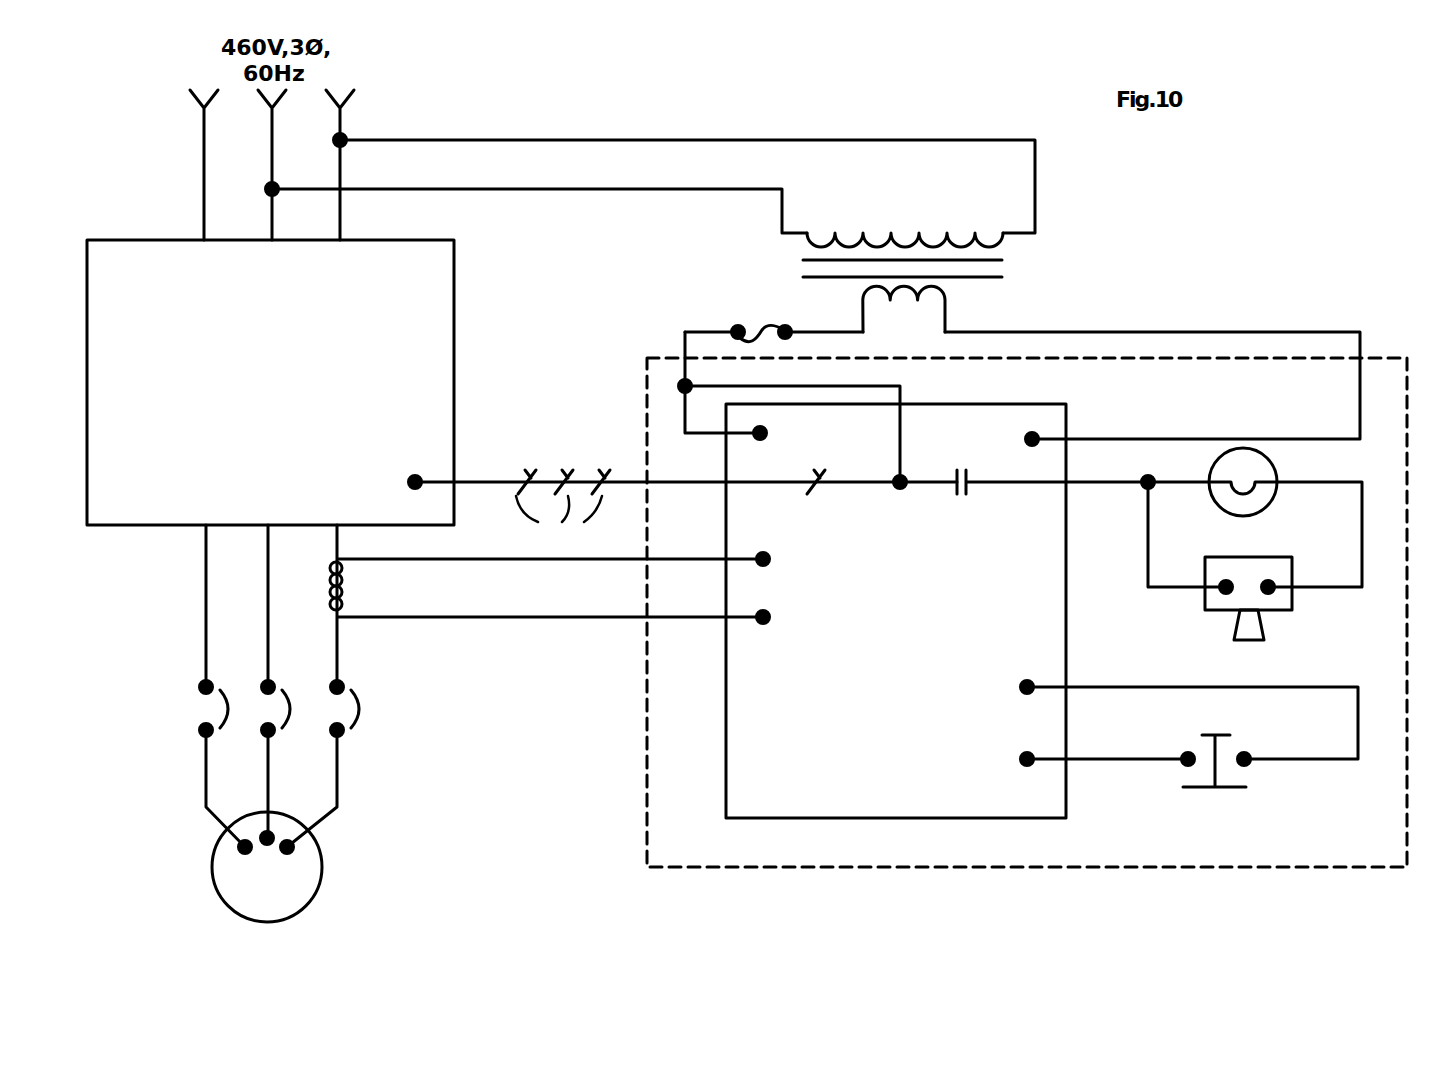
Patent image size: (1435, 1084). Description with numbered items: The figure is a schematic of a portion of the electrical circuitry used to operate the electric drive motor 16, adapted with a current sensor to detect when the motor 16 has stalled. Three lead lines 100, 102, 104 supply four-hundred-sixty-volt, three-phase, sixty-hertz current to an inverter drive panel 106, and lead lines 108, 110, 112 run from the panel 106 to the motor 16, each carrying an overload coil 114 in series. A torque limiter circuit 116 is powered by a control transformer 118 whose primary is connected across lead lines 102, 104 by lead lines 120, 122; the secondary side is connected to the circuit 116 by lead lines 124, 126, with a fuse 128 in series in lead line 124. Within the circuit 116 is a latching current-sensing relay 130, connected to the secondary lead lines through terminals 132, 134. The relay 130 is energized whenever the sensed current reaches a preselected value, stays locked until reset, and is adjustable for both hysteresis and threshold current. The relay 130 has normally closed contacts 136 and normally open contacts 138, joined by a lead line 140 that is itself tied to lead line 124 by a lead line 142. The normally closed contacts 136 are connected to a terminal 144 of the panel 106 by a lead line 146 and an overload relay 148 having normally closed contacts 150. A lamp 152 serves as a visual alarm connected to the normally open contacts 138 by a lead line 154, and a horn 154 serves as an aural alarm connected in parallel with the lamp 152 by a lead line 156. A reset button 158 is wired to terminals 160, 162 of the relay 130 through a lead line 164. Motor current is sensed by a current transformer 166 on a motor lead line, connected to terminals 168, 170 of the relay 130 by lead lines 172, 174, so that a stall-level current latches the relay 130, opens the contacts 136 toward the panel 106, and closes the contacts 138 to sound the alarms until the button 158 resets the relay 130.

The drive motor 16 is at (300, 878).
The lead line 100 is at (203, 200).
The lead line 102 is at (270, 215).
The lead line 104 is at (344, 124).
The inverter drive panel 106 is at (246, 406).
The lead line 108 is at (206, 585).
The lead line 110 is at (268, 655).
The lead line 112 is at (338, 556).
The overload coil 114 is at (228, 711).
The torque limiter circuit 116 is at (645, 735).
The control transformer 118 is at (1054, 240).
The lead line 120 is at (662, 140).
The lead line 122 is at (700, 192).
The lead line 124 is at (697, 332).
The lead line 126 is at (1058, 332).
The fuse 128 is at (764, 328).
The latching current-sensing relay 130 is at (886, 800).
The terminal 132 is at (789, 433).
The terminal 134 is at (1007, 439).
The normally closed contacts 136 is at (813, 495).
The normally open contacts 138 is at (963, 497).
The lead line 140 is at (930, 492).
The lead line 142 is at (893, 386).
The terminal 144 is at (658, 482).
The lead line 146 is at (683, 490).
The overload relay 148 is at (524, 457).
The normally closed contacts 150 is at (559, 516).
The lamp 152 is at (1268, 468).
The horn 154 is at (1083, 484).
The lead line 156 is at (1148, 512).
The reset button 158 is at (1222, 788).
The terminal 160 is at (1164, 717).
The terminal 162 is at (1079, 759).
The lead line 164 is at (1178, 687).
The current transformer 166 is at (345, 585).
The terminal 168 is at (790, 560).
The terminal 170 is at (790, 617).
The lead line 172 is at (622, 561).
The lead line 174 is at (560, 619).